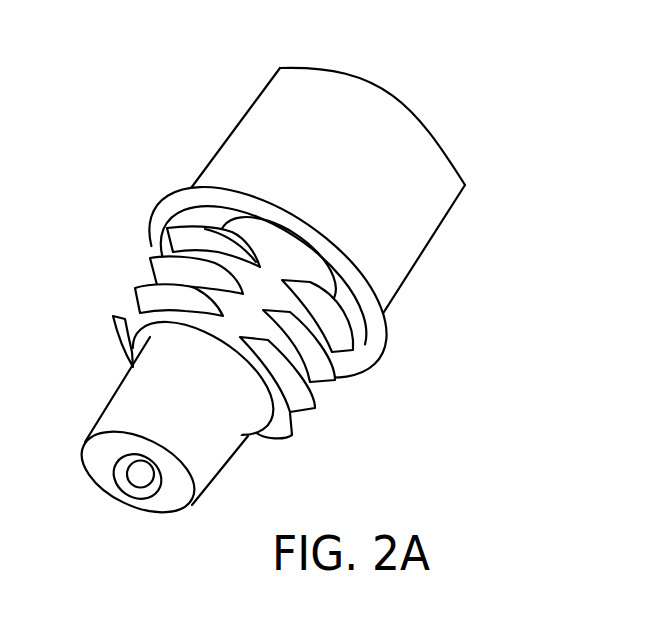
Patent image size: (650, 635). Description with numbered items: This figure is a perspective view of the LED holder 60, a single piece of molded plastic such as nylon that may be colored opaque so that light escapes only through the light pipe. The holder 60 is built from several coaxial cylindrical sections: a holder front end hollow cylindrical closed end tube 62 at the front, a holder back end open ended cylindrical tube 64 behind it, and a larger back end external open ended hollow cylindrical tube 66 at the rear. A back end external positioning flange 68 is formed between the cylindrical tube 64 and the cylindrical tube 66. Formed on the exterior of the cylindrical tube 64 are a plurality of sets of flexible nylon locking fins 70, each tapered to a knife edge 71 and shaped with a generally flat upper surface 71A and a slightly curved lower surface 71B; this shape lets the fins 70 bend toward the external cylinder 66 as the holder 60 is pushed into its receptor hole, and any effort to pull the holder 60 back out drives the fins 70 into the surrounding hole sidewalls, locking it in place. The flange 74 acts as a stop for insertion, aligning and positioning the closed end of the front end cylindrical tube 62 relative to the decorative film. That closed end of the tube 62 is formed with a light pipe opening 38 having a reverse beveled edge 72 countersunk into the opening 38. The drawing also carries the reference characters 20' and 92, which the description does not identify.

The pump assembly 20' is at (290, 326).
The light pipe opening 38 is at (155, 493).
The LED holder 60 is at (281, 326).
The holder front end hollow cylindrical closed end tube 62 is at (150, 460).
The holder back end open ended cylindrical tube 64 is at (240, 323).
The back end external open ended hollow cylindrical tube 66 is at (412, 226).
The back end external positioning flange 68 is at (135, 308).
The flexible nylon locking fins 70 is at (256, 333).
The knife edge 71 is at (240, 240).
The flat upper surface 71A is at (147, 297).
The curved lower surface 71B is at (296, 401).
The reverse beveled edge 72 is at (140, 474).
The flange 74 is at (385, 322).
The housing 92 is at (441, 629).